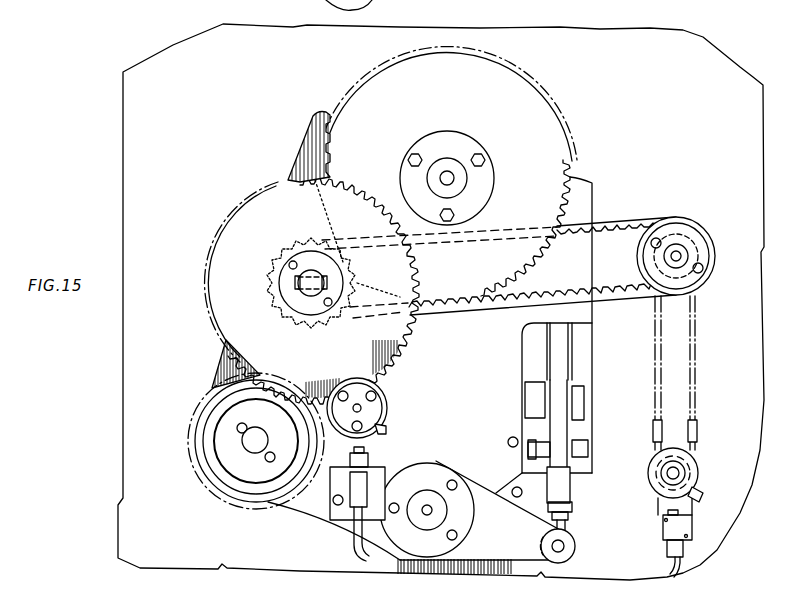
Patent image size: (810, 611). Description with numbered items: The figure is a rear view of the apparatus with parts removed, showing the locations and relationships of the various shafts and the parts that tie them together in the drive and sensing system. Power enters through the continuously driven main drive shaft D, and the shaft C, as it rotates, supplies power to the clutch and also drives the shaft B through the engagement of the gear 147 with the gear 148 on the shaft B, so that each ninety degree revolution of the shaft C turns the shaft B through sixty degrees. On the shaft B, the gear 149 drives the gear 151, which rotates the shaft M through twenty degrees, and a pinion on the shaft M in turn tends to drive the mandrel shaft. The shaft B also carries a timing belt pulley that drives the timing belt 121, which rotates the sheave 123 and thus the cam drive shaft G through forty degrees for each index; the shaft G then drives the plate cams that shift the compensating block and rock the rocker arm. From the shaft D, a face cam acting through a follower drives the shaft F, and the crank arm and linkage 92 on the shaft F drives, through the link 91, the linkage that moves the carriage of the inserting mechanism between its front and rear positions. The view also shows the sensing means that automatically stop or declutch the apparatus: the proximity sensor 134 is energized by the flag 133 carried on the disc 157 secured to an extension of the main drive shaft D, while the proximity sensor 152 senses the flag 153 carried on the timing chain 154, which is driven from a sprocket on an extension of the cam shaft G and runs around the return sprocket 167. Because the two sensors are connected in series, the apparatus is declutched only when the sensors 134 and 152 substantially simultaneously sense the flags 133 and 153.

The gear 148 is at (300, 193).
The gear 151 is at (340, 141).
The gear 149 is at (298, 250).
The shaft B is at (312, 292).
The shaft M is at (447, 178).
The timing belt 121 is at (628, 224).
The sheave 123 is at (692, 223).
The cam drive shaft G is at (688, 256).
The timing chain 154 is at (697, 428).
The return sprocket 167 is at (690, 462).
The flag 153 is at (703, 492).
The proximity sensor 152 is at (686, 528).
The link 91 is at (570, 428).
The crank arm and linkage 92 is at (468, 483).
The shaft F is at (432, 510).
The proximity sensor 134 is at (364, 456).
The gear 147 is at (240, 380).
The shaft C is at (253, 440).
The disc 157 is at (376, 394).
The main drive shaft D is at (362, 408).
The flag 133 is at (386, 431).